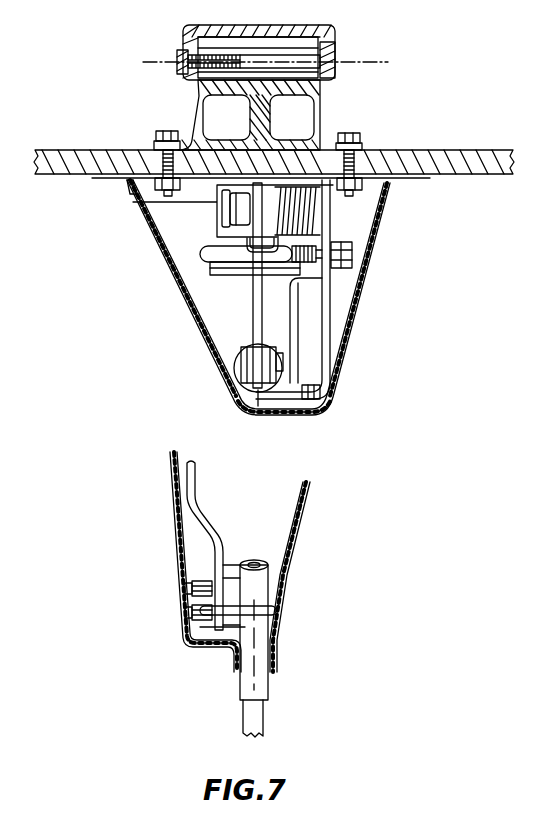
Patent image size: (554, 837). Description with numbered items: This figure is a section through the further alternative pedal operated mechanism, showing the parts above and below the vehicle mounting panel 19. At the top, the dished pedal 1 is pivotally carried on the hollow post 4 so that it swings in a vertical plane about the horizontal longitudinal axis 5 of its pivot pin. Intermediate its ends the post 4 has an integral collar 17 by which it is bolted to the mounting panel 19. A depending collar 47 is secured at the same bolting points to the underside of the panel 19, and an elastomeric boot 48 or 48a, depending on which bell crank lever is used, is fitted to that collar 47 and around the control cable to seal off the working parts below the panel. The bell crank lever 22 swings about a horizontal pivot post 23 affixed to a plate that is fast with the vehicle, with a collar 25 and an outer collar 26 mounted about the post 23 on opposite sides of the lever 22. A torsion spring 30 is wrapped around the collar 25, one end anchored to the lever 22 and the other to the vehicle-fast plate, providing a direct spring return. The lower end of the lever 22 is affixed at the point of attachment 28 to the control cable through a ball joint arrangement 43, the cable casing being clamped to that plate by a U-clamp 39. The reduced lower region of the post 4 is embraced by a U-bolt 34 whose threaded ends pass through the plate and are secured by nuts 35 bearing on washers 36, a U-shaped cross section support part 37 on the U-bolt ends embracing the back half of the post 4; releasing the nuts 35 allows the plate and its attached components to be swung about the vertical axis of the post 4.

The pedal 1 is at (333, 38).
The hollow post 4 is at (267, 118).
The horizontal longitudinal axis 5 is at (360, 62).
The collar 17 is at (371, 152).
The mounting panel 19 is at (433, 160).
The bell crank lever 22 is at (256, 308).
The horizontal pivot post 23 is at (222, 210).
The collar 25 is at (272, 203).
The outer collar 26 is at (240, 219).
The point of attachment 28 is at (236, 366).
The torsion spring 30 is at (297, 220).
The U-bolt 34 is at (205, 255).
The nuts 35 is at (352, 268).
The washers 36 is at (316, 270).
The U-shaped cross section support part 37 is at (308, 273).
The U-clamp 39 is at (275, 612).
The ball joint arrangement 43 is at (284, 420).
The depending collar 47 is at (128, 196).
The elastomeric boot 48 is at (180, 300).
The elastomeric boot 48a is at (172, 507).